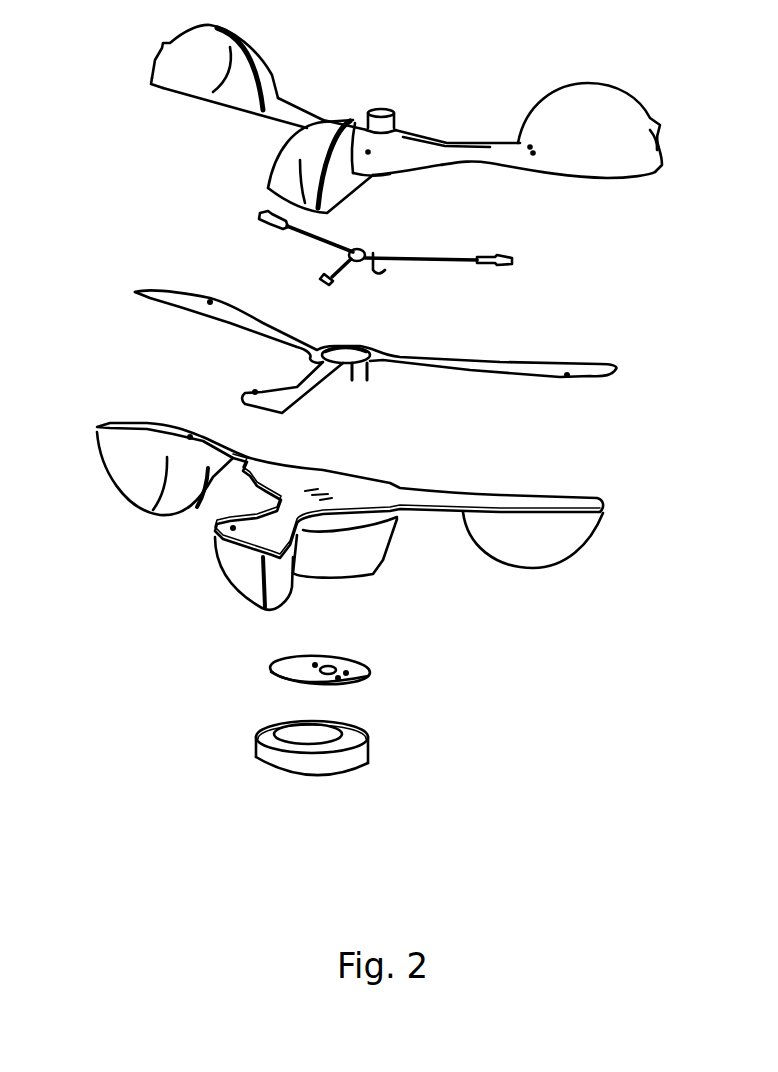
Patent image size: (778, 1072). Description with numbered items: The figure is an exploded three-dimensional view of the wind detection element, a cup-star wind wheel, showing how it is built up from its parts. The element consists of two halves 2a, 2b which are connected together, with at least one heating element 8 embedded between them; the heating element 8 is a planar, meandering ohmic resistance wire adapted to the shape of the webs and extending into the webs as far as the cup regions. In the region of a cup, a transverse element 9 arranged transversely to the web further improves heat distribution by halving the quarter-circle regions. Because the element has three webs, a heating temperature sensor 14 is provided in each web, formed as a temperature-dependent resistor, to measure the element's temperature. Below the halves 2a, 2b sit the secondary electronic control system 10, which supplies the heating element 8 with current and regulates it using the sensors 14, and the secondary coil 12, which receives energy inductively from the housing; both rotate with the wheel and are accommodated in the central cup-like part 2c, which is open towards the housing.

The upper half of the wind detection element 2a is at (588, 115).
The lower half of the wind detection element 2b is at (560, 540).
The central cup-like part 2c is at (337, 557).
The heating element 8 is at (603, 367).
The transverse element 9 is at (213, 80).
The secondary electronic control system 10 is at (270, 662).
The secondary coil 12 is at (255, 747).
The heating temperature sensor 14 is at (258, 215).